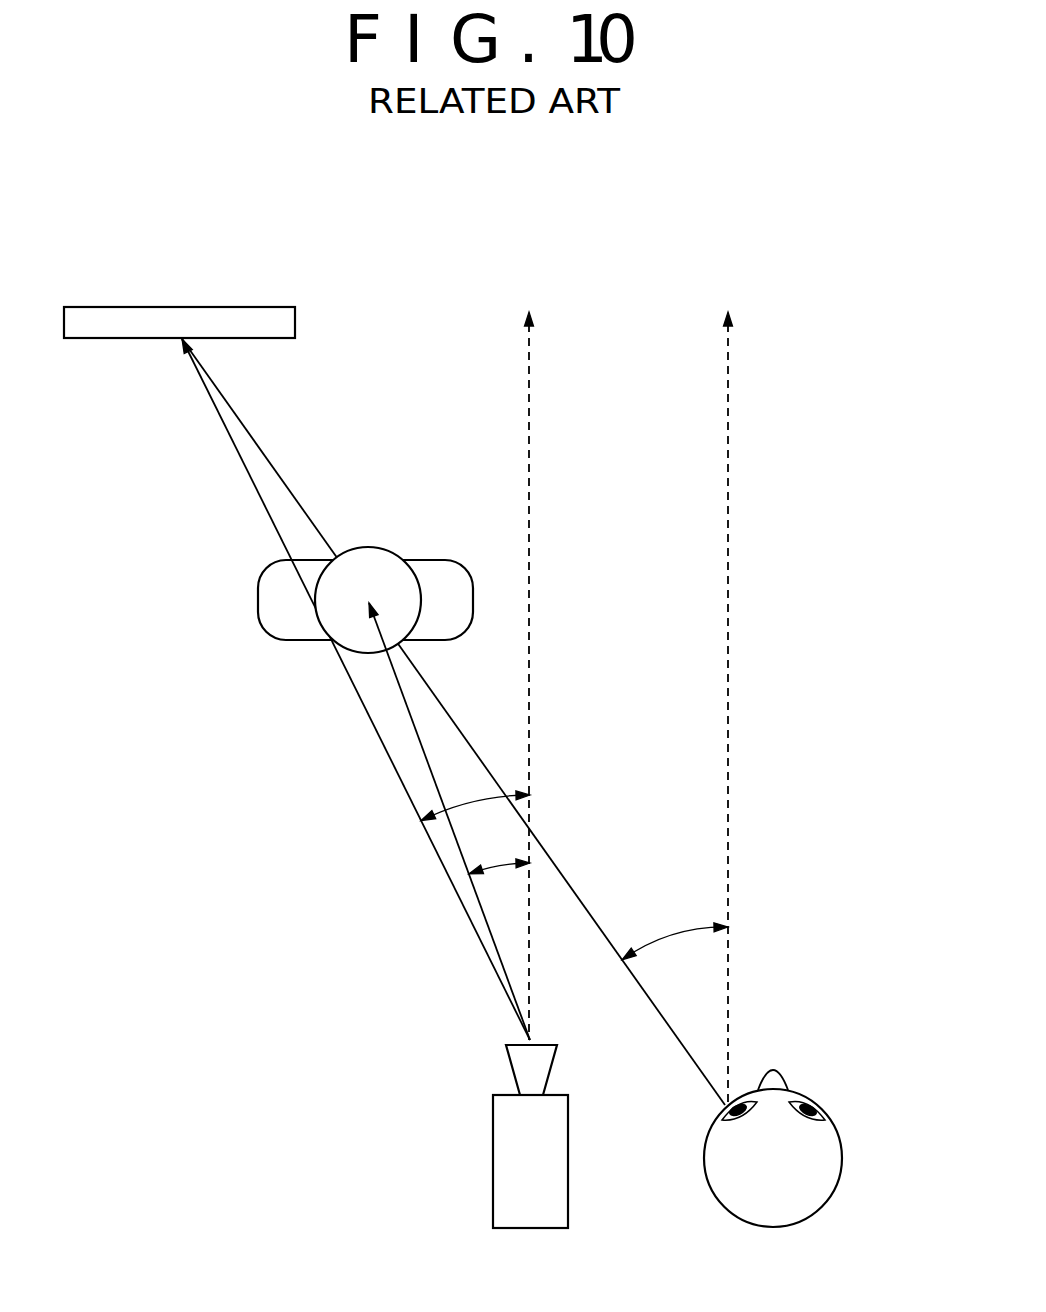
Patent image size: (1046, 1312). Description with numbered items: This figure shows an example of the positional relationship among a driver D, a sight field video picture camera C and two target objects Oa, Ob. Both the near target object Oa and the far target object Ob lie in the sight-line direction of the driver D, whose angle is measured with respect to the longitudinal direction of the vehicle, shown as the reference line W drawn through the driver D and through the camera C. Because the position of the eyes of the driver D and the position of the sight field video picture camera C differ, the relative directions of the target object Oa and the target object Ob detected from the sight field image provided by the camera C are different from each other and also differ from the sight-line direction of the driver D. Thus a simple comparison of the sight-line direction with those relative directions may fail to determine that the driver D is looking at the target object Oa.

The target object Ob is at (295, 320).
The target object Oa is at (422, 559).
The forward direction reference line W is at (529, 385).
The sight field video picture camera C is at (493, 1155).
The driver D is at (842, 1148).